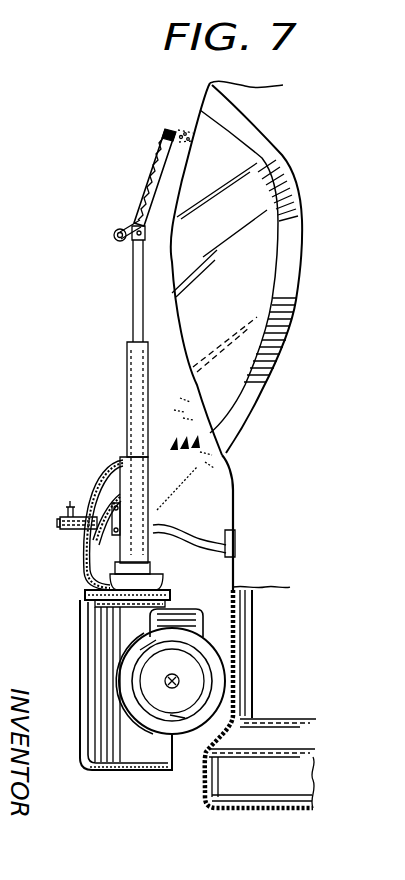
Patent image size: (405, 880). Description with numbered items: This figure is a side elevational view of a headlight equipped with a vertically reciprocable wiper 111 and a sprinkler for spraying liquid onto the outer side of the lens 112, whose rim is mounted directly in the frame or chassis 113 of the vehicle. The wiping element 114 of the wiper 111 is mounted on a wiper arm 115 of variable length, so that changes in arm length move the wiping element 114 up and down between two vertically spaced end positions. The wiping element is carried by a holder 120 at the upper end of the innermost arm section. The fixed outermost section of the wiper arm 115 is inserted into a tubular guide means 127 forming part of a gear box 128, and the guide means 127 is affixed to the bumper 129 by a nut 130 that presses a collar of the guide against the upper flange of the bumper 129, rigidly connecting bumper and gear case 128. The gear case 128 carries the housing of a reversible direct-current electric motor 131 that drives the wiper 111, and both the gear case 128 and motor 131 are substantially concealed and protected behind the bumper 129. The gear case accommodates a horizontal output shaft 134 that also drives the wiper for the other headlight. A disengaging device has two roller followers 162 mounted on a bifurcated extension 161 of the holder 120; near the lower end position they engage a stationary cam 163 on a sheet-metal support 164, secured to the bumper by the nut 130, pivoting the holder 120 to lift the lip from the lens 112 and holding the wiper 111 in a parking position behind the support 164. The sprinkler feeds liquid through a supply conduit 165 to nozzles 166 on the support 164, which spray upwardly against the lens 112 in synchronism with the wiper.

The wiper 111 is at (145, 182).
The lens 112 is at (265, 233).
The frame or chassis 113 is at (268, 810).
The wiping element 114 is at (162, 133).
The wiper arm 115 is at (131, 358).
The holder 120 is at (158, 160).
The tubular guide means 127 is at (83, 596).
The gear box or housing 128 is at (186, 737).
The bumper 129 is at (78, 629).
The nut 130 is at (112, 568).
The electric motor 131 is at (180, 614).
The output shaft 134 is at (178, 680).
The bifurcated extension 161 is at (131, 219).
The roller followers 162 is at (114, 237).
The stationary cam 163 is at (58, 532).
The stationary support 164 is at (110, 470).
The supply conduit 165 is at (200, 539).
The nozzles 166 is at (60, 520).